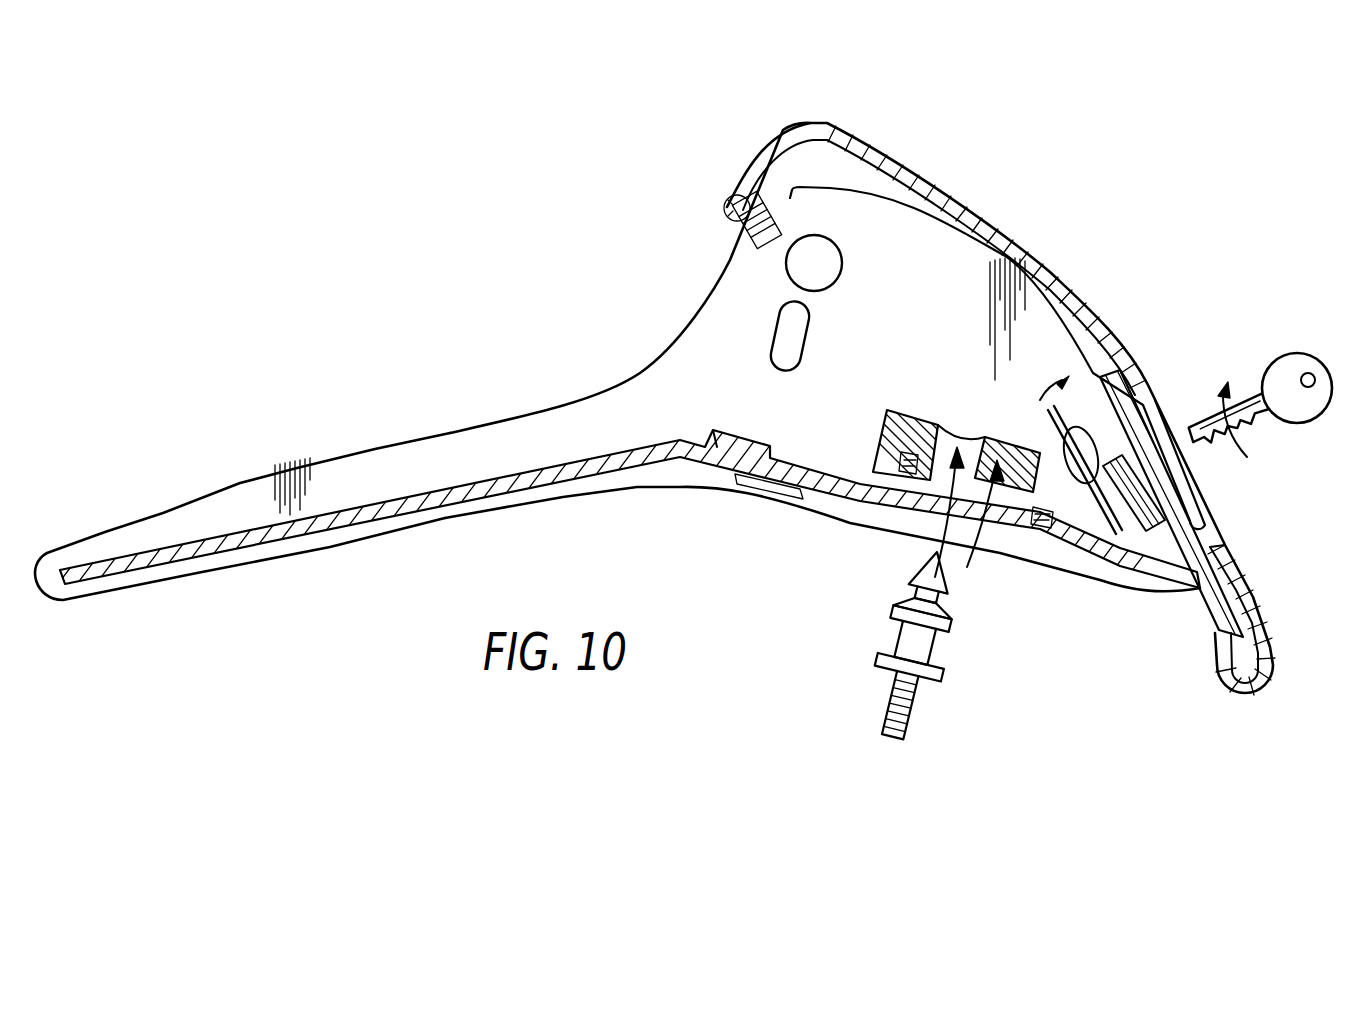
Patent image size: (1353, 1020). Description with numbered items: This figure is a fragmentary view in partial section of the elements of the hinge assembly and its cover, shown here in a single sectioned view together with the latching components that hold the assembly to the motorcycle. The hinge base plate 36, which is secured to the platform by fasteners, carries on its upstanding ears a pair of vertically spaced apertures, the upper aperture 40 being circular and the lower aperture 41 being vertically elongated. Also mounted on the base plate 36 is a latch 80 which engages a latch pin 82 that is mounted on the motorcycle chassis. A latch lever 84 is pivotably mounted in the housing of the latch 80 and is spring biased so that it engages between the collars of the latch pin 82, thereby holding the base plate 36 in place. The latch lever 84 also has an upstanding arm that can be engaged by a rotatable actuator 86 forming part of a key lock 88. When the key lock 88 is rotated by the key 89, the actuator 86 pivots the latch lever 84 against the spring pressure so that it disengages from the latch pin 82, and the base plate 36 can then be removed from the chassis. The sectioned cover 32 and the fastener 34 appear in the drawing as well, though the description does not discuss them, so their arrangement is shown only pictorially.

The body 32 is at (940, 190).
The screw 34 is at (750, 187).
The base plate 36 is at (430, 507).
The upper aperture 40 is at (837, 273).
The lower aperture 41 is at (807, 333).
The latch 80 is at (967, 547).
The latch pin 82 is at (903, 647).
The latch lever 84 is at (1110, 367).
The rotatable actuator 86 is at (1053, 453).
The key lock 88 is at (1133, 487).
The key 89 is at (1297, 417).